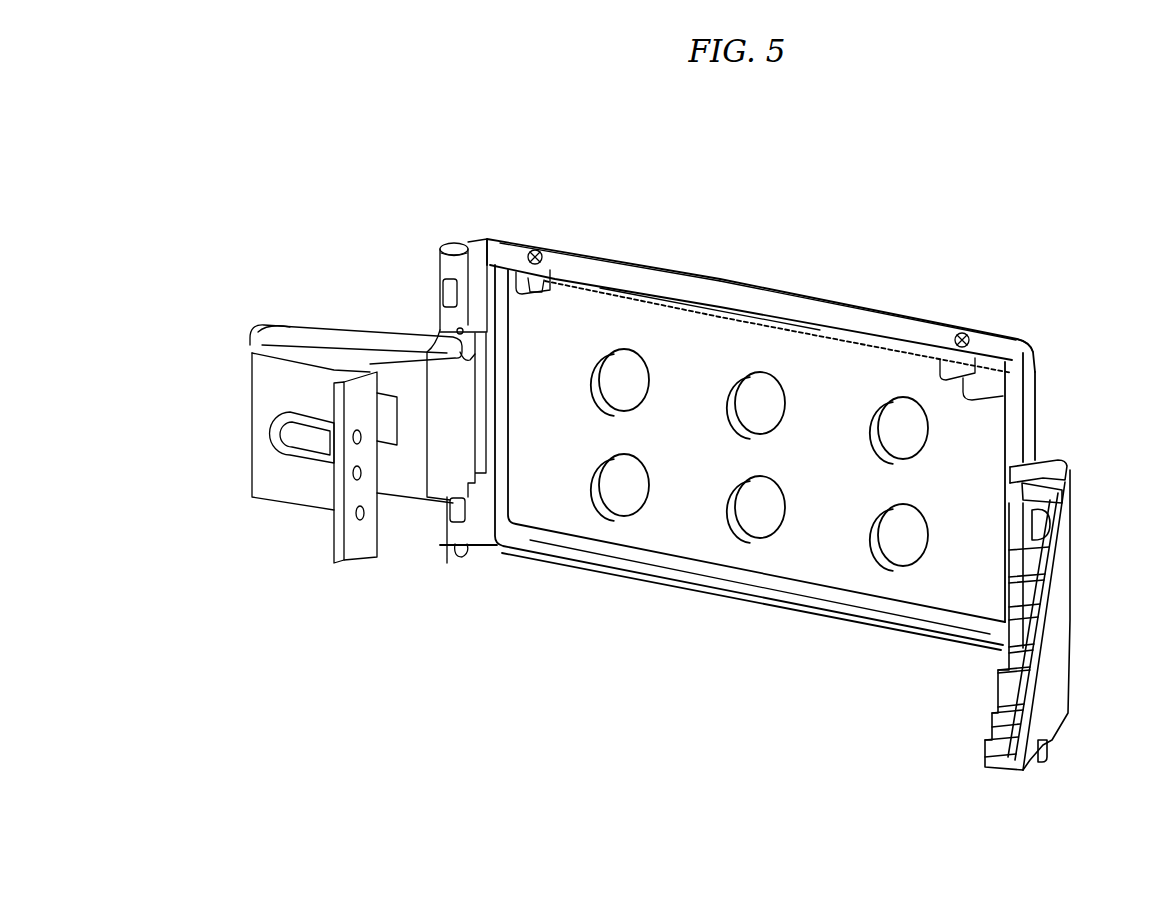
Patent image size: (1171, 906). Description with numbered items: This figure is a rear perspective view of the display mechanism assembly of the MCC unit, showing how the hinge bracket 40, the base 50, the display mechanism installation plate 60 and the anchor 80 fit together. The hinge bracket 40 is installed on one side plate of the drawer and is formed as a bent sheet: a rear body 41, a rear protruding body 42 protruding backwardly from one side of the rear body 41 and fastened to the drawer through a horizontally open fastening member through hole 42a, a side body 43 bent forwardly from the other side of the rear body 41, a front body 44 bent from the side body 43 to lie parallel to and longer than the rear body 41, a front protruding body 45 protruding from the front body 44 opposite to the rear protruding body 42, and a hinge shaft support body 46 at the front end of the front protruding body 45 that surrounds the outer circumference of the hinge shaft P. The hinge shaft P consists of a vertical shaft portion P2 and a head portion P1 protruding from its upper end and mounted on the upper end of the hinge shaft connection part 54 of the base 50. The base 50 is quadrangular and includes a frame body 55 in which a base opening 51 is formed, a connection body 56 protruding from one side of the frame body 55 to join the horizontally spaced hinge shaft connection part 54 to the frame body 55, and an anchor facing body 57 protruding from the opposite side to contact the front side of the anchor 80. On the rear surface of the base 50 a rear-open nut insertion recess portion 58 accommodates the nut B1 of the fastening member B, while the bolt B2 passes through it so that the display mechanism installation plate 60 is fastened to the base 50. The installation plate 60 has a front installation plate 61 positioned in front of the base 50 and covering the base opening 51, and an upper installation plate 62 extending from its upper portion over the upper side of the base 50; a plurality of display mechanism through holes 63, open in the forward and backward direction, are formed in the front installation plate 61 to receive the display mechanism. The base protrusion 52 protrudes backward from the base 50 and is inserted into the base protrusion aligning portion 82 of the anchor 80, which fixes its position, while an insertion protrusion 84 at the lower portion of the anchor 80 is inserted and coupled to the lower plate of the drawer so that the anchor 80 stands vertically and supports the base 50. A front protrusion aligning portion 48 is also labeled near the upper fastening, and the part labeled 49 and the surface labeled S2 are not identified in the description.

The hinge bracket 40 is at (316, 451).
The rear body 41 is at (290, 490).
The rear protruding body 42 is at (373, 530).
The fastening member through hole 42a is at (375, 530).
The side body 43 is at (258, 336).
The front body 44 is at (288, 335).
The front protruding body 45 is at (455, 430).
The hinge shaft support body 46 is at (455, 345).
The front protrusion aligning portion 48 is at (552, 280).
The clip 49 is at (1010, 395).
The base 50 is at (668, 650).
The base opening 51 is at (585, 553).
The base protrusion 52 is at (1015, 545).
The hinge shaft connection part 54 is at (472, 258).
The frame body 55 is at (537, 560).
The connection body 56 is at (483, 300).
The anchor facing body 57 is at (1060, 460).
The nut insertion recess portion 58 is at (1018, 350).
The display mechanism installation plate 60 is at (780, 195).
The front installation plate 61 is at (820, 360).
The upper installation plate 62 is at (775, 300).
The display mechanism through hole 63 is at (624, 380).
The anchor 80 is at (1064, 605).
The base protrusion aligning portion 82 is at (1055, 515).
The insertion protrusion 84 is at (1048, 745).
The fastening member B is at (505, 124).
The nut B1 is at (517, 287).
The bolt B2 is at (535, 251).
The hinge shaft P is at (390, 236).
The head portion P1 is at (446, 247).
The vertical shaft portion P2 is at (444, 292).
The surface S2 is at (320, 347).